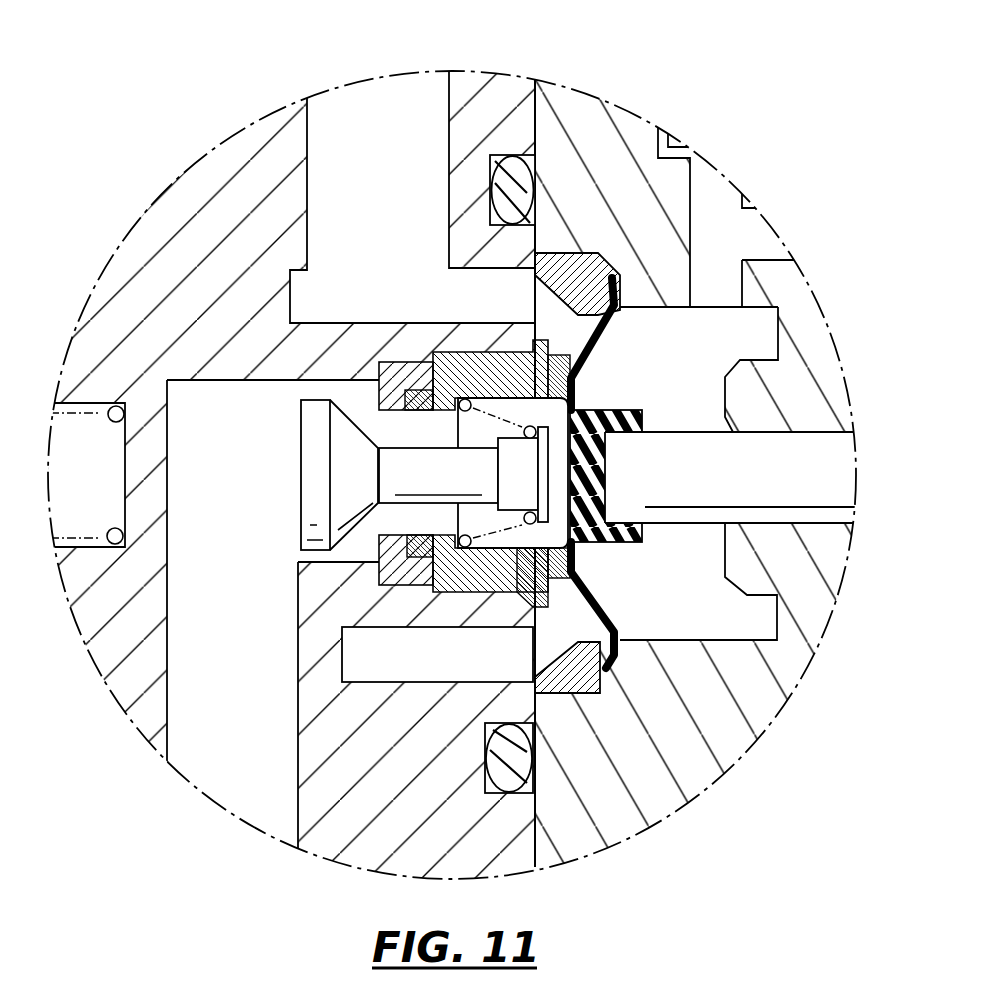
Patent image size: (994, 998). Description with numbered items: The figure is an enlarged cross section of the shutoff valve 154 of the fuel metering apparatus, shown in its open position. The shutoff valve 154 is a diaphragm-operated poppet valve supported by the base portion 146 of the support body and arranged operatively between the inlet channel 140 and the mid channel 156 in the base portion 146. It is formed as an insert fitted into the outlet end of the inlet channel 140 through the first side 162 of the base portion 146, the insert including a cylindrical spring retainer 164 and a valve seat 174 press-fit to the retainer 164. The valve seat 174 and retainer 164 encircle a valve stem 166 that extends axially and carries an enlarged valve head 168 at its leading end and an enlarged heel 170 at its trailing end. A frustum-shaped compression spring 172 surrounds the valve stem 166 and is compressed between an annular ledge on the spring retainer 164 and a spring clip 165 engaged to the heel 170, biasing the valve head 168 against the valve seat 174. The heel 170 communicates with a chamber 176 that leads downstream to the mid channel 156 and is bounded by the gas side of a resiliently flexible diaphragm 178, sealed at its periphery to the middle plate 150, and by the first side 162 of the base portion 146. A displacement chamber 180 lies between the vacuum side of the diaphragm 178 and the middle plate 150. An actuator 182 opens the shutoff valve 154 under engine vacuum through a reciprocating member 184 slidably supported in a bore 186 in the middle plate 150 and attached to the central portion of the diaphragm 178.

The inlet channel 140 is at (248, 708).
The base portion 146 is at (412, 858).
The middle plate 150 is at (732, 727).
The shutoff valve 154 is at (257, 93).
The mid channel 156 is at (386, 180).
The first side 162 is at (540, 810).
The spring retainer 164 is at (492, 372).
The spring clip 165 is at (548, 482).
The valve stem 166 is at (466, 482).
The valve head 168 is at (303, 473).
The heel 170 is at (522, 462).
The compression spring 172 is at (515, 535).
The valve seat 174 is at (379, 409).
The chamber 176 is at (547, 307).
The diaphragm 178 is at (608, 355).
The displacement chamber 180 is at (726, 627).
The actuator 182 is at (805, 412).
The reciprocating member 184 is at (787, 484).
The bore 186 is at (829, 433).